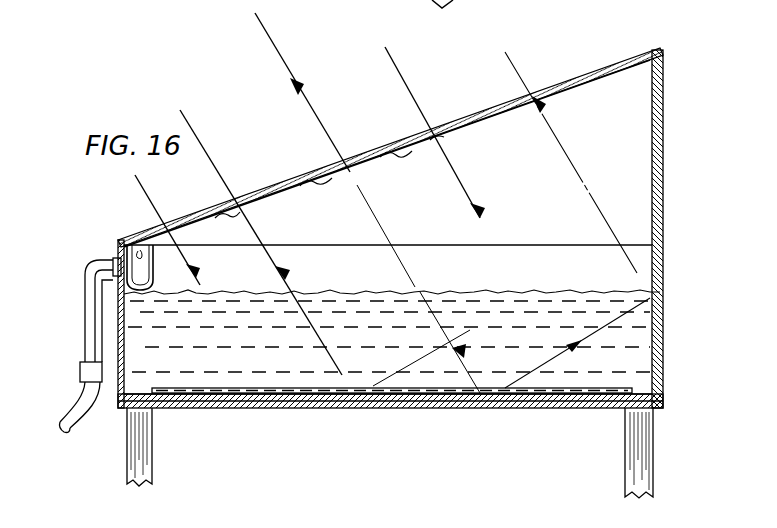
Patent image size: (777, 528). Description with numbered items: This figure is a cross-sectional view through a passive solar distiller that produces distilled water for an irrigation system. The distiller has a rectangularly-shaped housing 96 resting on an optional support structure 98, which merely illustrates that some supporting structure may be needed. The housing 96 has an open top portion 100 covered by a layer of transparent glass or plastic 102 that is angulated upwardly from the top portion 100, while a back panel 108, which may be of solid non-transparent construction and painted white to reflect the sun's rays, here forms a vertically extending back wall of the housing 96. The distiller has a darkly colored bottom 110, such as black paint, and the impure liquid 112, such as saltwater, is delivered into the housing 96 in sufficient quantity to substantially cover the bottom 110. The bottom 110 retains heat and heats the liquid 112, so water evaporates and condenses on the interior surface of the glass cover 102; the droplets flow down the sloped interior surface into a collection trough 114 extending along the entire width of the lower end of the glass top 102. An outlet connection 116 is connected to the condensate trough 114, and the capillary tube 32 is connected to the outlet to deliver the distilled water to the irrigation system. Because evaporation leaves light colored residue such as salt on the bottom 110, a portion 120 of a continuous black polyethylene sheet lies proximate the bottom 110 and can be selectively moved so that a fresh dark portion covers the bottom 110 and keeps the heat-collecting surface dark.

The capillary tube 32 is at (75, 432).
The housing 96 is at (665, 319).
The support structure 98 is at (152, 470).
The open top portion 100 is at (522, 245).
The glass 102 is at (462, 119).
The back panel 108 is at (663, 110).
The bottom 110 is at (150, 392).
The impure liquid 112 is at (463, 296).
The collection trough 114 is at (166, 248).
The outlet connection 116 is at (92, 313).
The sheet portion 120 is at (236, 392).